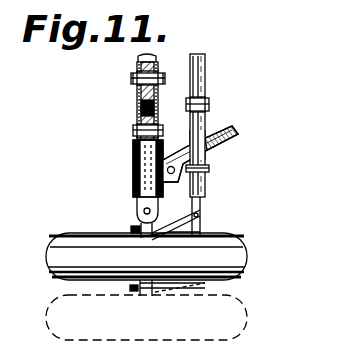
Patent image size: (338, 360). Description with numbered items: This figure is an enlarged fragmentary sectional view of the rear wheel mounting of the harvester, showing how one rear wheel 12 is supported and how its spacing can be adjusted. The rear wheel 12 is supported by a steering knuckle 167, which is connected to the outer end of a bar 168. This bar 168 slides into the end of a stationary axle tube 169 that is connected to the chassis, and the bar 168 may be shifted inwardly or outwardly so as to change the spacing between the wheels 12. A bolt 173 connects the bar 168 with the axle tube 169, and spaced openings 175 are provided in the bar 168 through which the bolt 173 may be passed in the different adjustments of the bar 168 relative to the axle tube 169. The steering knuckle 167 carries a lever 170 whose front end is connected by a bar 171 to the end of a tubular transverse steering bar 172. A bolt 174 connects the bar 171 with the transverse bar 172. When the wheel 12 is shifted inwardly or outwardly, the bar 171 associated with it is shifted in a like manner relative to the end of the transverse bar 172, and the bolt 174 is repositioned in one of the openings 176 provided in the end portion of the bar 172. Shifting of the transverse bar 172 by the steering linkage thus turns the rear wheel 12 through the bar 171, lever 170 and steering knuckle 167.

The rear wheel 12 is at (240, 255).
The steering knuckle 167 is at (137, 208).
The bar 168 is at (133, 143).
The stationary axle tube 169 is at (136, 98).
The lever 170 is at (200, 232).
The bar 171 is at (210, 200).
The tubular transverse steering bar 172 is at (200, 66).
The bolt 173 is at (131, 78).
The bolt 174 is at (208, 104).
The spaced opening 175 is at (137, 113).
The opening 176 is at (206, 131).